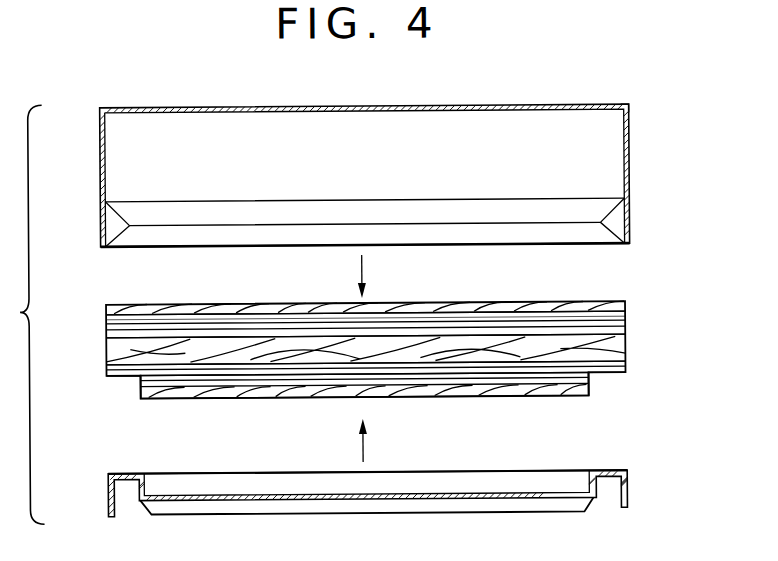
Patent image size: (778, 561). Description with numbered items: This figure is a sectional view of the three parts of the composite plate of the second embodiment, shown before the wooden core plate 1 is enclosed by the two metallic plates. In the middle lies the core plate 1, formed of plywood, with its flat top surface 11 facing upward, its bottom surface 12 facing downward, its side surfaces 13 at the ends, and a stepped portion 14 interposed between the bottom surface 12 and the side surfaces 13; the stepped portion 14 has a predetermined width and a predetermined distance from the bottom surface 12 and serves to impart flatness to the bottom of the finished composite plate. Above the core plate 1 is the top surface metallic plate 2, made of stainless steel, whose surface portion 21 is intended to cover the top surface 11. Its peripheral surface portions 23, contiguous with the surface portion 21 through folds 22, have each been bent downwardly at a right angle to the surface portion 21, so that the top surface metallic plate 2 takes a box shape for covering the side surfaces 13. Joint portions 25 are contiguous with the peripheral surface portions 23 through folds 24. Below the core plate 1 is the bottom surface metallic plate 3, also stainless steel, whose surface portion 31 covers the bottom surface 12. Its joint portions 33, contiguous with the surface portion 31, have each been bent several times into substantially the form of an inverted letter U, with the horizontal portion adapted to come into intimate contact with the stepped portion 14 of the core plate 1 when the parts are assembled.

The core plate 1 is at (172, 292).
The top surface metallic plate 2 is at (444, 101).
The bottom surface metallic plate 3 is at (465, 465).
The top surface 11 is at (213, 303).
The bottom surface 12 is at (224, 398).
The side surfaces 13 is at (627, 344).
The stepped portion 14 is at (608, 374).
The surface portion 21 is at (521, 105).
The folds 22 is at (630, 105).
The peripheral surface portions 23 is at (610, 145).
The folds 24 is at (470, 224).
The joint portions 25 is at (632, 223).
The surface portion 31 is at (350, 500).
The joint portions 33 is at (126, 472).